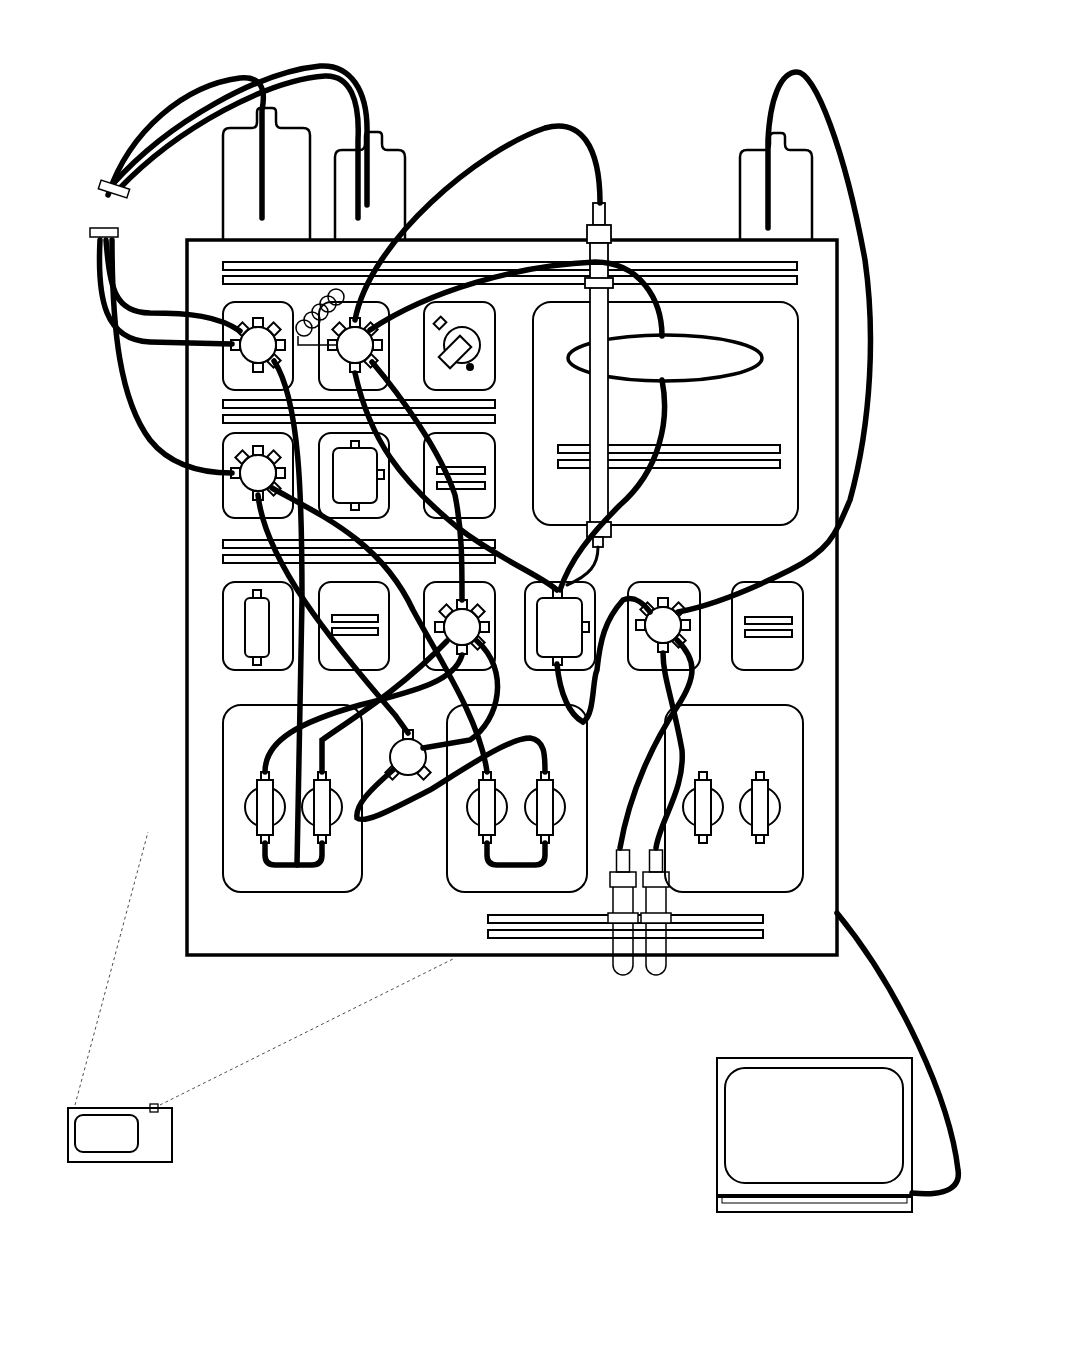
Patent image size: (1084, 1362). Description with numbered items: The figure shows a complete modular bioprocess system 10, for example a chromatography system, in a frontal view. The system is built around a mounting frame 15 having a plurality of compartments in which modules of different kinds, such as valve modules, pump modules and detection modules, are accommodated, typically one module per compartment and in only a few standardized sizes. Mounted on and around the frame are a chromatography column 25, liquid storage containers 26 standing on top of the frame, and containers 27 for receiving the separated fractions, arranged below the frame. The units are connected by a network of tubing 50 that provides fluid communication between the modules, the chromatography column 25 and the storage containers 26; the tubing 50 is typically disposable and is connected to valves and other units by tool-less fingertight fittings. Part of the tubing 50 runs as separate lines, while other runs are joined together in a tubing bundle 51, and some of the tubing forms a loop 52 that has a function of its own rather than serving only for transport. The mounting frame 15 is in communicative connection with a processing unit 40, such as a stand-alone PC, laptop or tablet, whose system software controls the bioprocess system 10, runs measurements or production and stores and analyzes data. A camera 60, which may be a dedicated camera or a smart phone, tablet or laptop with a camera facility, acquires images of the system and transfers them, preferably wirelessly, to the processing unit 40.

The bioprocess system 10 is at (668, 110).
The mounting frame 15 is at (828, 625).
The chromatography column 25 is at (605, 215).
The liquid storage container 26 is at (285, 148).
The container for receiving separated fractions 27 is at (632, 980).
The processing unit 40 is at (718, 1175).
The tubing 50 is at (150, 440).
The tubing bundle 51 is at (108, 180).
The loop 52 is at (300, 302).
The camera 60 is at (178, 1135).